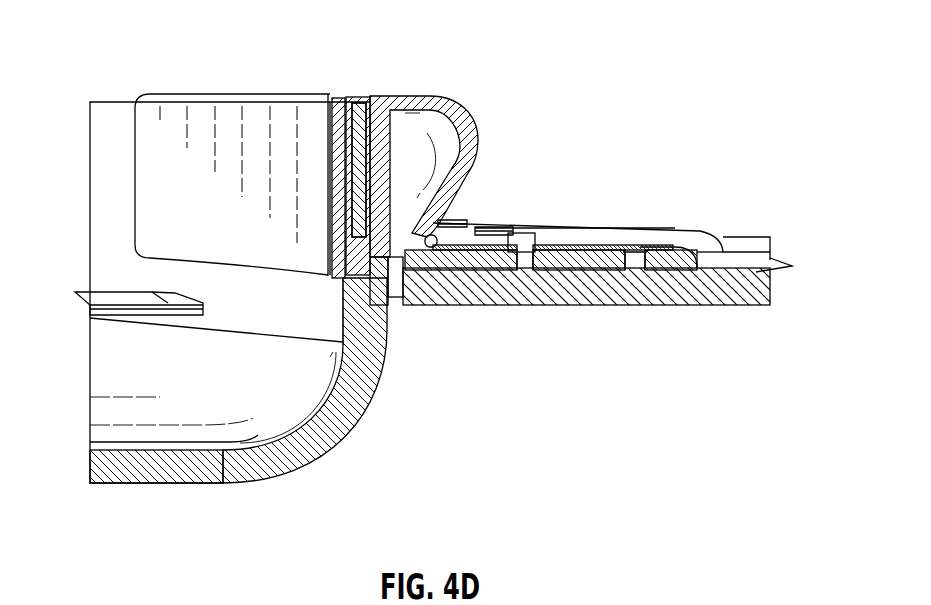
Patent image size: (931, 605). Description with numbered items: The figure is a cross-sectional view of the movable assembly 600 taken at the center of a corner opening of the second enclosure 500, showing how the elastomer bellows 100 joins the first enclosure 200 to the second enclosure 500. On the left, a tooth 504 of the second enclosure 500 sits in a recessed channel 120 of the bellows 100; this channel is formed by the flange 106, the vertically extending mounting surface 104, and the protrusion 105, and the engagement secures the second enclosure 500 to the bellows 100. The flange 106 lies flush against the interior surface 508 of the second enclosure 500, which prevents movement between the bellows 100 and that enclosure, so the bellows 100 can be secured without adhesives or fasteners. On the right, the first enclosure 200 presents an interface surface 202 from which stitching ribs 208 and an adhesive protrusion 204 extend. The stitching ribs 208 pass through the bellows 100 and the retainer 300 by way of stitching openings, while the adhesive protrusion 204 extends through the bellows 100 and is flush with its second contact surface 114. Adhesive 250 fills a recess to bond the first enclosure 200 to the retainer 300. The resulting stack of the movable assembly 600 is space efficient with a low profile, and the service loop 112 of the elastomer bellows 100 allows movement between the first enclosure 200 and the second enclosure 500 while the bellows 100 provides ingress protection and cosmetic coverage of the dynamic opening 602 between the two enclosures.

The bellows 100 is at (205, 82).
The mounting surface 104 is at (363, 130).
The protrusion 105 is at (352, 255).
The flange 106 is at (157, 190).
The service loop 112 is at (470, 123).
The second contact surface 114 is at (686, 237).
The recessed channel 120 is at (357, 95).
The first enclosure 200 is at (797, 345).
The interface surface 202 is at (776, 210).
The adhesive protrusion 204 is at (634, 268).
The stitching rib 208 is at (448, 223).
The adhesive 250 is at (607, 272).
The retainer 300 is at (606, 238).
The second enclosure 500 is at (140, 535).
The tooth 504 is at (357, 228).
The interior surface 508 is at (321, 375).
The movable assembly 600 is at (428, 38).
The dynamic opening 602 is at (397, 305).